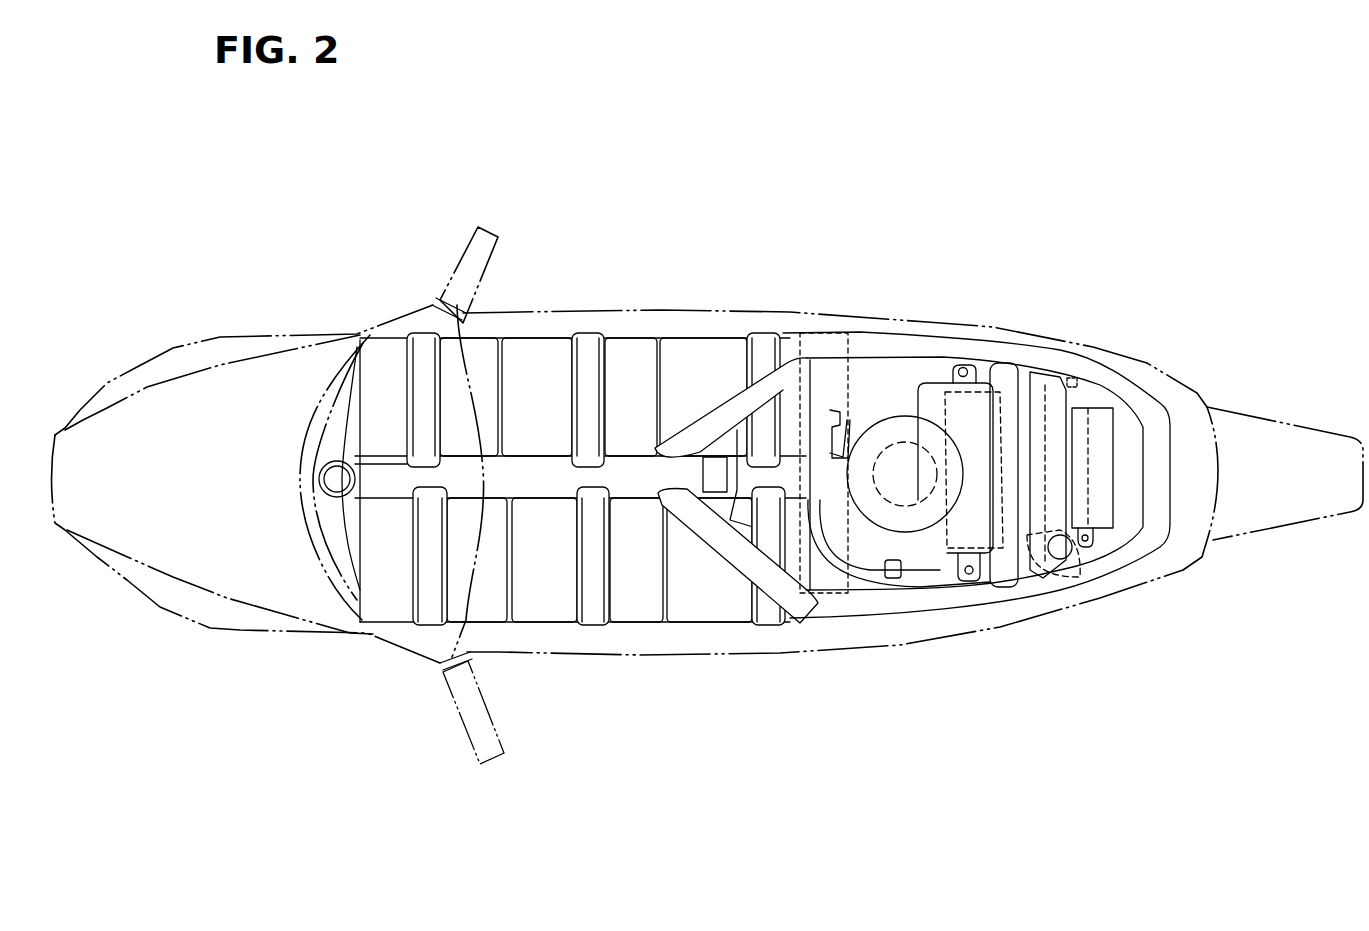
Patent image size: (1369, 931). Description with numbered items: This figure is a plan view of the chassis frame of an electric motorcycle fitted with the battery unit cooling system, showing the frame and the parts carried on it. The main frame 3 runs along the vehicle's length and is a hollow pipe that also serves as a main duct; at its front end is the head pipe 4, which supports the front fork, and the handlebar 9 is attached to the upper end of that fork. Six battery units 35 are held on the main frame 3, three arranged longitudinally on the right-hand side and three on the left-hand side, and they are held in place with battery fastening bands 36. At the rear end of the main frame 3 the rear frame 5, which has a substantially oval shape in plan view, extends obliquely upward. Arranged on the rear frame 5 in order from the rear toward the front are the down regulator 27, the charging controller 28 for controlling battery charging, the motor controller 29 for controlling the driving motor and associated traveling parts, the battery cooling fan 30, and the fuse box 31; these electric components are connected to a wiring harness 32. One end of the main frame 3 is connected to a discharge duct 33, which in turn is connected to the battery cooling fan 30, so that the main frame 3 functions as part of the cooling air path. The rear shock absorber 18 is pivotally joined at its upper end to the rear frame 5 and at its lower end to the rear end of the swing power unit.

The main frame 3 is at (532, 477).
The head pipe 4 is at (312, 487).
The rear frame 5 is at (937, 350).
The handlebar 9 is at (473, 725).
The rear shock absorber 18 is at (1050, 530).
The down regulator 27 is at (1100, 497).
The charging controller 28 is at (990, 587).
The motor controller 29 is at (1020, 533).
The battery cooling fan 30 is at (867, 520).
The fuse box 31 is at (704, 350).
The wiring harness 32 is at (777, 380).
The discharge duct 33 is at (820, 505).
The battery unit 35 is at (385, 370).
The battery fastening band 36 is at (421, 357).